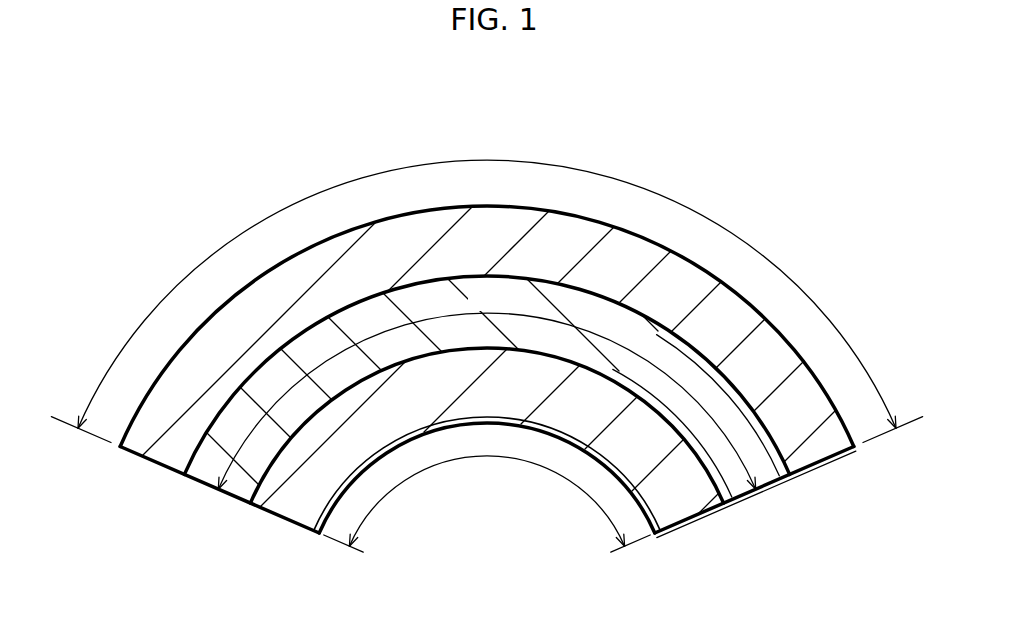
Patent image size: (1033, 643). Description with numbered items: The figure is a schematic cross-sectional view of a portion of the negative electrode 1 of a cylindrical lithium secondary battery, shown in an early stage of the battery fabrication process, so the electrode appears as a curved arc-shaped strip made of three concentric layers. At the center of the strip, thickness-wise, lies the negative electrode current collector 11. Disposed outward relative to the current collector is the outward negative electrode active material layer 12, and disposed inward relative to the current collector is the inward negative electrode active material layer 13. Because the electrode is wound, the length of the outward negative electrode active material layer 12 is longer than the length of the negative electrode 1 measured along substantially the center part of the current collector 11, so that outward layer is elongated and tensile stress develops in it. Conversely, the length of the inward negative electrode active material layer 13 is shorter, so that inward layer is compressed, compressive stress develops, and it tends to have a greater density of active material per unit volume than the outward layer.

The negative electrode 1 is at (764, 200).
The negative electrode current collector 11 is at (733, 486).
The outward negative electrode active material layer 12 is at (808, 447).
The inward negative electrode active material layer 13 is at (677, 505).